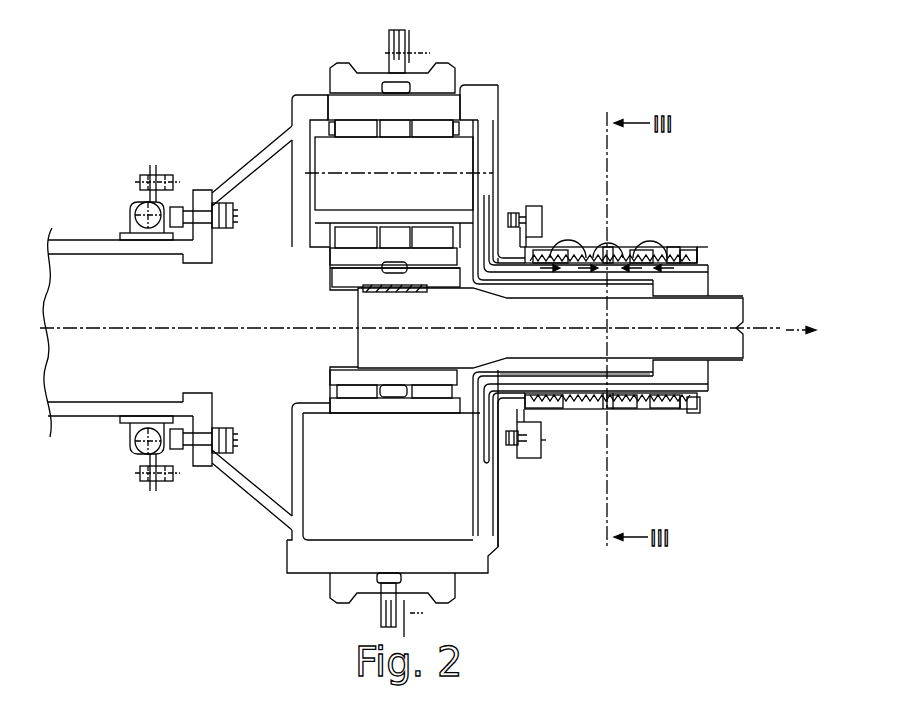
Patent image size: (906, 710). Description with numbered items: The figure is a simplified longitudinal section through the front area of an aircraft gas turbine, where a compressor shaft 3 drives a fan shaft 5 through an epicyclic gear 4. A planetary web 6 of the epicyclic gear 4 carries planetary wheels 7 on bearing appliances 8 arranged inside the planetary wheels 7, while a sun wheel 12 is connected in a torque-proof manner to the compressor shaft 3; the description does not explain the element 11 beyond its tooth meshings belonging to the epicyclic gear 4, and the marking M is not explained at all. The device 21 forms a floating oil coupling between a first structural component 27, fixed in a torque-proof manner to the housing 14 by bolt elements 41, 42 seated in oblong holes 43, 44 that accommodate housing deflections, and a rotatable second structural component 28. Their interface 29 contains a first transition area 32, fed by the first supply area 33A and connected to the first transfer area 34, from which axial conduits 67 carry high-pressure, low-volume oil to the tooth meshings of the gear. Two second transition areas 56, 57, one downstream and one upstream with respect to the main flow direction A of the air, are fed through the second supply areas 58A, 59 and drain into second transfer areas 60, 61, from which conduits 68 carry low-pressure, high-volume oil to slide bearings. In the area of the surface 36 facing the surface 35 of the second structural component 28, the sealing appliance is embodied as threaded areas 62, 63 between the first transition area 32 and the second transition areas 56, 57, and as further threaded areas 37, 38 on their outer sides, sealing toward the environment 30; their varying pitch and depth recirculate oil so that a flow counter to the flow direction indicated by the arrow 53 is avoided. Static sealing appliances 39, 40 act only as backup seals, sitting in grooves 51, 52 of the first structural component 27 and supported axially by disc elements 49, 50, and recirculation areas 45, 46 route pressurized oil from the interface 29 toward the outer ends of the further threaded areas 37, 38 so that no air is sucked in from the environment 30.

The compressor shaft 3 is at (740, 359).
The epicyclic gear 4 is at (329, 83).
The fan shaft 5 is at (63, 413).
The planetary web 6 is at (478, 555).
The planetary wheels 7 is at (250, 182).
The bearing appliances 8 is at (462, 102).
The bearing cover 11 is at (455, 75).
The sun wheel 12 is at (247, 500).
The housing 14 is at (528, 240).
The device 21 is at (637, 307).
The first structural component 27 is at (692, 240).
The second structural component 28 is at (505, 133).
The interface 29 is at (578, 253).
The environment 30 is at (801, 206).
The first transition area 32 is at (608, 258).
The first supply area 33A is at (593, 253).
The first transfer area 34 is at (630, 255).
The surface 35 is at (705, 265).
The surface 36 is at (697, 276).
The further threaded area 37 is at (553, 250).
The further threaded area 38 is at (686, 249).
The static sealing appliance 39 is at (530, 258).
The static sealing appliance 40 is at (700, 243).
The bolt element 41 is at (514, 212).
The bolt element 42 is at (509, 445).
The oblong hole 43 is at (534, 205).
The oblong hole 44 is at (522, 455).
The recirculation area 45 is at (524, 397).
The recirculation area 46 is at (667, 409).
The disc element 49 is at (547, 240).
The disc element 50 is at (514, 410).
The groove 51 is at (532, 450).
The groove 52 is at (690, 413).
The arrow 53 is at (637, 253).
The second transition area 56 is at (556, 410).
The second transition area 57 is at (640, 410).
The second supply area 58A is at (606, 243).
The second supply area 59 is at (673, 252).
The second transfer area 60 is at (580, 400).
The second transfer area 61 is at (647, 407).
The threaded area 62 is at (603, 407).
The threaded area 63 is at (620, 403).
The conduits 67 is at (568, 274).
The conduits 68 is at (533, 380).
The main flow direction A is at (798, 334).
The motor axis M is at (740, 318).